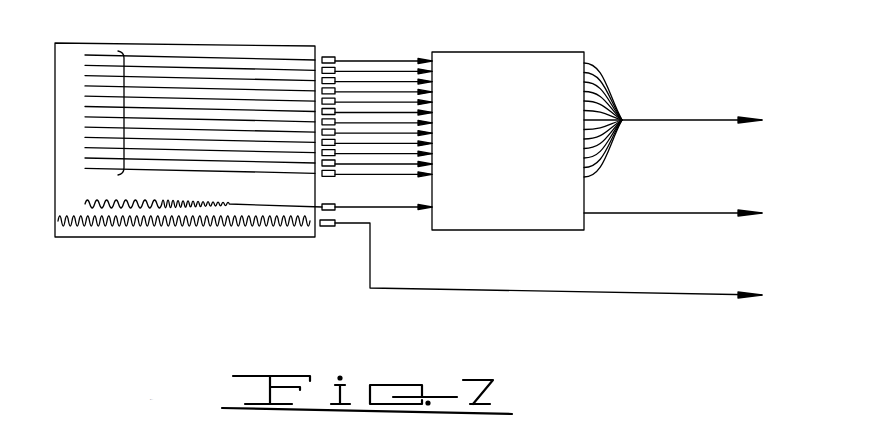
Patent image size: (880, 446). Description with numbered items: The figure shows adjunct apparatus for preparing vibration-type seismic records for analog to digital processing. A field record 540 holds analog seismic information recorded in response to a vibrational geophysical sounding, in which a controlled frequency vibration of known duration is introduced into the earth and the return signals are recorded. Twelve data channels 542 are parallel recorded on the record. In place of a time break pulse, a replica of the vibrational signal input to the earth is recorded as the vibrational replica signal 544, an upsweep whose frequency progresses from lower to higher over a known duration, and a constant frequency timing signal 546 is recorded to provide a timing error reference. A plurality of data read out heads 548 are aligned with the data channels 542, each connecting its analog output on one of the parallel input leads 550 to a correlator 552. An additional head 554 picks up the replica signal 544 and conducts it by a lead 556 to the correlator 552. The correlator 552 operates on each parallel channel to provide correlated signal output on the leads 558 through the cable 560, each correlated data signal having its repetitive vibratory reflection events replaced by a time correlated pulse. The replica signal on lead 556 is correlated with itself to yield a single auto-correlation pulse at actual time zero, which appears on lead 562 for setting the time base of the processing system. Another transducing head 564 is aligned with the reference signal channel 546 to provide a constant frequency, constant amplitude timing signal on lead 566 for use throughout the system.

The field record 540 is at (210, 52).
The data channels 542 is at (128, 113).
The vibrational replica signal 544 is at (160, 203).
The constant frequency timing signal 546 is at (165, 222).
The data read out heads 548 is at (334, 92).
The parallel input leads 550 is at (380, 82).
The correlator 552 is at (522, 61).
The additional head 554 is at (335, 210).
The lead 556 is at (405, 210).
The leads 558 is at (600, 98).
The cable 560 is at (690, 123).
The lead 562 is at (668, 214).
The transducing head 564 is at (332, 228).
The lead 566 is at (668, 297).